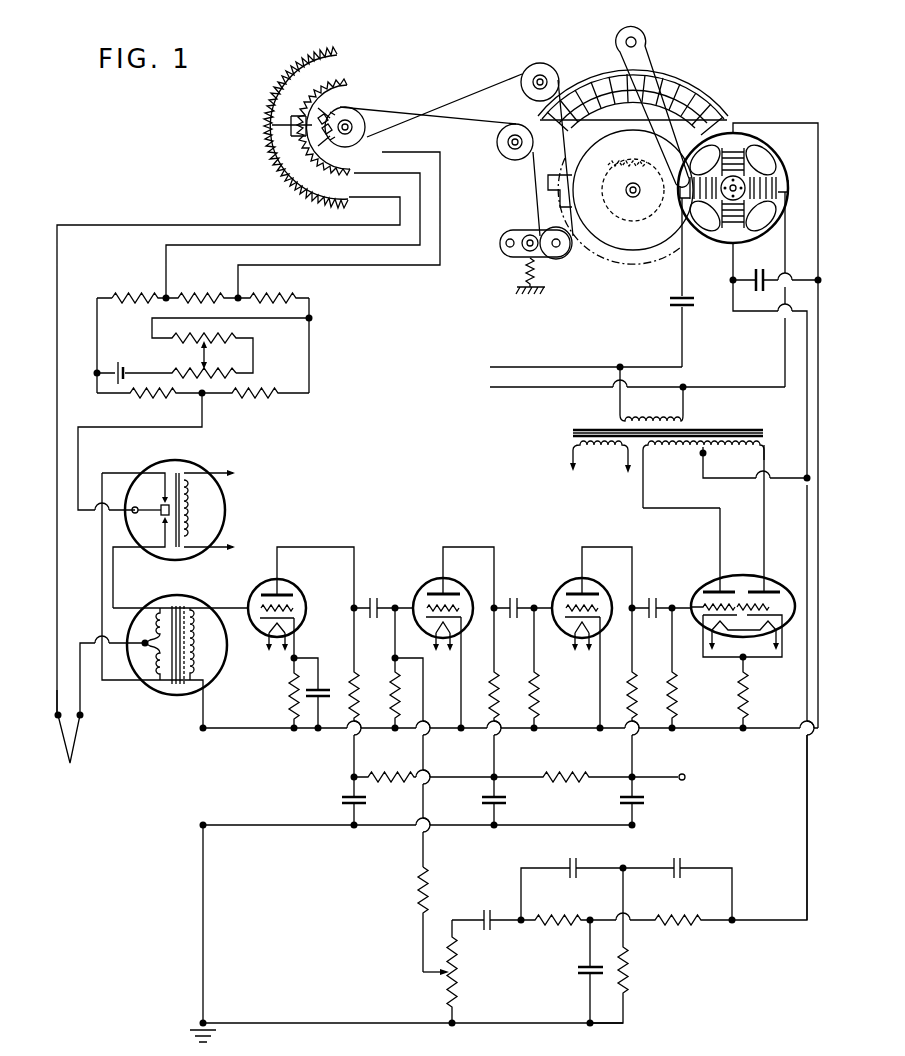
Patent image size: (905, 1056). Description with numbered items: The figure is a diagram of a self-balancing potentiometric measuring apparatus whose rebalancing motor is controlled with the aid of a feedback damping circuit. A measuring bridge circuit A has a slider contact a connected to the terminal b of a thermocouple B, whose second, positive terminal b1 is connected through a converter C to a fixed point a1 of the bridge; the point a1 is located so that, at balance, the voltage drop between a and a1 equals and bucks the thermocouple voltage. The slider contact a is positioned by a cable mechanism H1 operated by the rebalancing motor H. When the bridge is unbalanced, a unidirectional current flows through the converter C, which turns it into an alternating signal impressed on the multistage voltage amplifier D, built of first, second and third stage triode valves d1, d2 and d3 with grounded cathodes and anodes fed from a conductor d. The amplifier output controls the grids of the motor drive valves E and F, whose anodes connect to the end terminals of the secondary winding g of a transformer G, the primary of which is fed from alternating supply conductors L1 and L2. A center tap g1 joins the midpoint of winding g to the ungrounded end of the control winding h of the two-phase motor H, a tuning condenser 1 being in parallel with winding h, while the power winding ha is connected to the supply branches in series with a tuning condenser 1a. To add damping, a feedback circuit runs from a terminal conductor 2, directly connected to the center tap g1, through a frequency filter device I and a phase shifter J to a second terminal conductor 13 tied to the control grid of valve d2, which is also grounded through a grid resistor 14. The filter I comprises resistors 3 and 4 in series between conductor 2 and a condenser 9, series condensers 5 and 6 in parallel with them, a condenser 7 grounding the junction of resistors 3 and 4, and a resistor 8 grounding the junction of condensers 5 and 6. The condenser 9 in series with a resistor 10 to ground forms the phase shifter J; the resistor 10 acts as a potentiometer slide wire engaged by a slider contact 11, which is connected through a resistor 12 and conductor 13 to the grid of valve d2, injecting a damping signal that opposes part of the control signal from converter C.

The slider contact a is at (272, 124).
The cable mechanism H1 is at (462, 88).
The control winding h is at (744, 158).
The power winding ha is at (750, 202).
The rebalancing motor H is at (733, 214).
The tuning condenser 1a is at (670, 302).
The tuning condenser 1 is at (775, 265).
The measuring bridge circuit A is at (328, 335).
The fixed point a1 is at (205, 397).
The converter C is at (228, 460).
The thermocouple B is at (77, 748).
The thermocouple terminal b is at (58, 692).
The positive thermocouple terminal b1 is at (80, 703).
The multistage voltage amplifier D is at (380, 571).
The first stage amplifying triode valve d1 is at (301, 587).
The second stage amplifying triode valve d2 is at (463, 586).
The third stage amplifying triode valve d3 is at (602, 586).
The motor drive valve E is at (702, 576).
The motor drive valve F is at (771, 578).
The alternating supply conductor L1 is at (508, 367).
The alternating supply conductor L2 is at (512, 388).
The transformer G is at (648, 437).
The secondary winding g is at (738, 455).
The center tap g1 is at (790, 477).
The grid resistor 14 is at (394, 694).
The terminal conductor 13 is at (423, 802).
The resistor 12 is at (419, 880).
The anode conductor d is at (657, 776).
The frequency filter device I is at (594, 911).
The terminal conductor 2 is at (807, 810).
The condenser 6 is at (570, 858).
The condenser 5 is at (677, 858).
The condenser 9 is at (487, 908).
The resistor 4 is at (553, 912).
The resistor 3 is at (672, 912).
The ground connecting condenser 7 is at (578, 972).
The resistor 8 is at (630, 968).
The potentiometer slide wire resistor 10 is at (458, 974).
The slider contact 11 is at (440, 984).
The phase shifter J is at (503, 977).